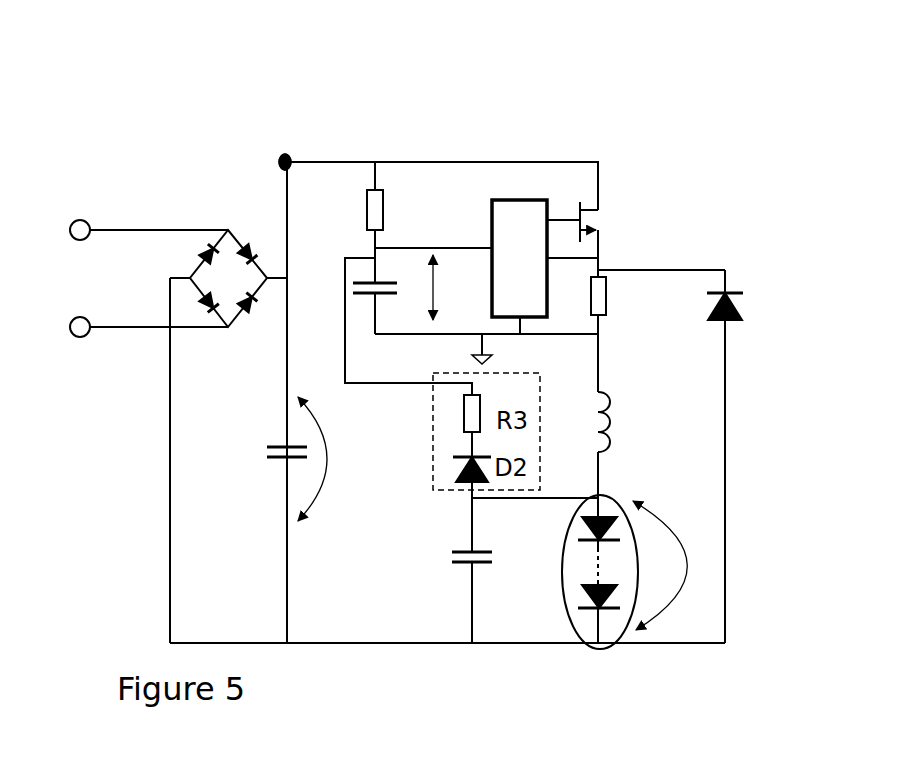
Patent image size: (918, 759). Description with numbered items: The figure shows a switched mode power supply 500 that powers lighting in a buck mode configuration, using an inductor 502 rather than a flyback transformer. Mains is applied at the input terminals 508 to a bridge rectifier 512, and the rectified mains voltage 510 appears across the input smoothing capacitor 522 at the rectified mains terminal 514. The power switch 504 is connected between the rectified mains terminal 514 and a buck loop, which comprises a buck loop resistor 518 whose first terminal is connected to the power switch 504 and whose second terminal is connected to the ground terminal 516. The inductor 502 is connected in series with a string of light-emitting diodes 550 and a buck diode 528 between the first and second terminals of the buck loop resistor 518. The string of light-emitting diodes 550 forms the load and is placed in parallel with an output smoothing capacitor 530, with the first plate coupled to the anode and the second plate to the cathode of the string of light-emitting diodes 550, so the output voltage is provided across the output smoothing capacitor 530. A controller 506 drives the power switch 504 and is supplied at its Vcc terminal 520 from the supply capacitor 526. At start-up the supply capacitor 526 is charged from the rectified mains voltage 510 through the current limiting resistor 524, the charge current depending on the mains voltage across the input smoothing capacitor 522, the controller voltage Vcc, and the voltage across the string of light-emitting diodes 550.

The switched mode power supply 500 is at (178, 128).
The inductor 502 is at (610, 452).
The power switch 504 is at (607, 204).
The controller 506 is at (520, 200).
The AC mains input terminals 508 is at (96, 217).
The rectified mains voltage 510 is at (358, 459).
The bridge rectifier B1 512 is at (230, 218).
The rectified mains terminal 514 is at (283, 160).
The ground terminal 516 is at (494, 357).
The buck loop resistor 518 is at (607, 278).
The Vcc terminal 520 is at (491, 248).
The input smoothing capacitor 522 is at (270, 458).
The current limiting resistor 524 is at (371, 190).
The supply capacitor 526 is at (356, 283).
The buck diode 528 is at (742, 291).
The output smoothing capacitor 530 is at (455, 565).
The string of LEDs 550 is at (572, 630).